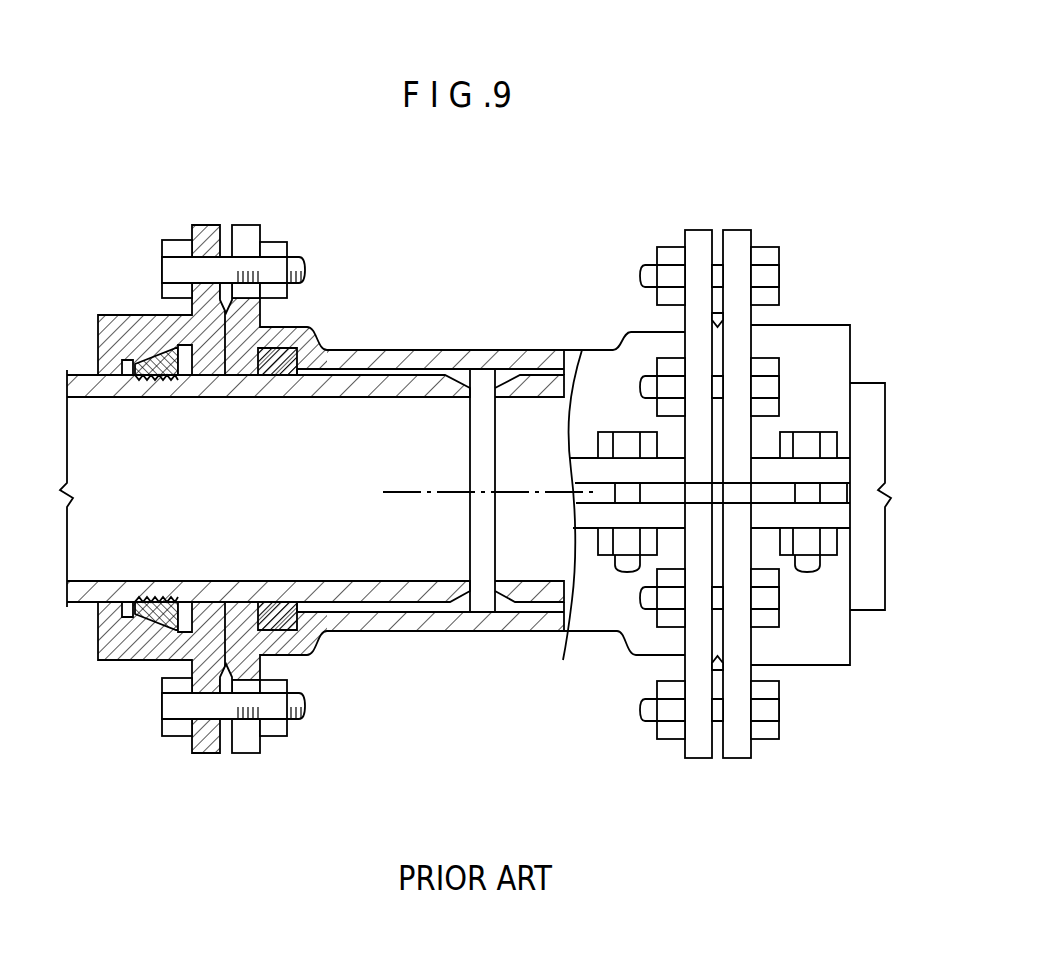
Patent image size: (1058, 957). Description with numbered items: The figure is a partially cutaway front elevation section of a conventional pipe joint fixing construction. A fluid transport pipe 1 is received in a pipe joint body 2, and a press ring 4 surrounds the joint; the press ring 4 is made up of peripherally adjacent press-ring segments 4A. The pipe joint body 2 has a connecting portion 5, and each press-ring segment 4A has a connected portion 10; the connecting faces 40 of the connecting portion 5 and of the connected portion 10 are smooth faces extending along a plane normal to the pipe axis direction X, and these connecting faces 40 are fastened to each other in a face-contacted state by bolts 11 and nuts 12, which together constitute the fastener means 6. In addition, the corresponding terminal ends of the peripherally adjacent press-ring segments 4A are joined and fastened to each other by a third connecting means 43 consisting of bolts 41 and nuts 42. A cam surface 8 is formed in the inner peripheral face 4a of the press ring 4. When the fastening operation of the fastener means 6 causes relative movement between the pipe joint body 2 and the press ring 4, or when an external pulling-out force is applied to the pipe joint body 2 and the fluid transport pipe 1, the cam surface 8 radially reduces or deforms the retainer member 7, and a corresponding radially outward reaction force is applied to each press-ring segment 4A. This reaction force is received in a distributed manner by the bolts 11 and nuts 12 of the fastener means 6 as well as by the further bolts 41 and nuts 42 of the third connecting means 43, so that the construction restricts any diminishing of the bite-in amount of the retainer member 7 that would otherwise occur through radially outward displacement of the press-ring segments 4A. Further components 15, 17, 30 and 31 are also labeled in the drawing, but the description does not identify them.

The fluid transport pipe 1 is at (413, 377).
The pipe joint body 2 is at (487, 357).
The press ring 4 is at (138, 305).
The press-ring segment 4A is at (115, 315).
The inner peripheral face 4a is at (130, 376).
The connecting portion 5 is at (252, 224).
The fastener means 6 is at (228, 205).
The retainer member 7 is at (158, 378).
The cam surface 8 is at (182, 378).
The connected portion 10 is at (205, 224).
The bolt 11 is at (175, 241).
The nut 12 is at (282, 243).
The coupling 15 is at (600, 566).
The central bolt 17 is at (577, 473).
The flange housing 30 is at (603, 432).
The nut 31 is at (600, 547).
The connecting face 40 is at (228, 333).
The bolt 41 is at (815, 432).
The nut 42 is at (828, 573).
The third connecting means 43 is at (835, 420).
The pipe axis direction X is at (407, 490).